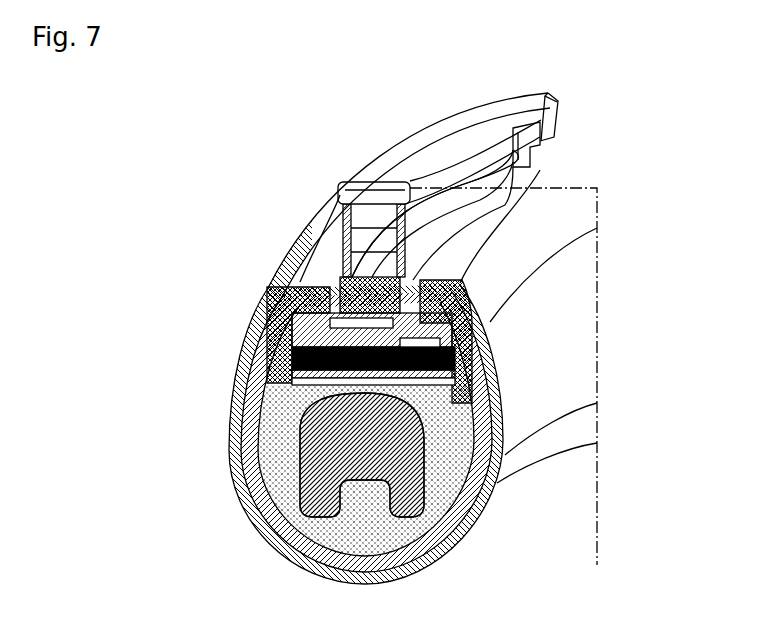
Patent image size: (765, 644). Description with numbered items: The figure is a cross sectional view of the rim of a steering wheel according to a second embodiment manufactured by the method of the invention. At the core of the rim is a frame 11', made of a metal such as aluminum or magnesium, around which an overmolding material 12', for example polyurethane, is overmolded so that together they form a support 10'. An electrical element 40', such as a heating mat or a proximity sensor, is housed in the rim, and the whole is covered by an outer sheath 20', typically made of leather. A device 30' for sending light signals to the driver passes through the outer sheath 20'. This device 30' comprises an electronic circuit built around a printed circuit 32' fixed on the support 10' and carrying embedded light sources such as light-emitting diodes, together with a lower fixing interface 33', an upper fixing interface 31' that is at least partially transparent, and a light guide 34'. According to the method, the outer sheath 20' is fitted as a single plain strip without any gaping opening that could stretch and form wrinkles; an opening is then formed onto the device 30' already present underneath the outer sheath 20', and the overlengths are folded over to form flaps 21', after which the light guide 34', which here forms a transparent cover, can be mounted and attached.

The support 10' is at (471, 444).
The frame 11' is at (429, 434).
The overmolding material 12' is at (435, 441).
The outer sheath 20' is at (354, 376).
The flaps 21' is at (487, 195).
The device 30' is at (266, 291).
The upper fixing interface 31' is at (272, 240).
The printed circuit 32' is at (302, 340).
The lower fixing interface 33' is at (293, 360).
The light guide 34' is at (275, 205).
The electrical element 40' is at (301, 429).